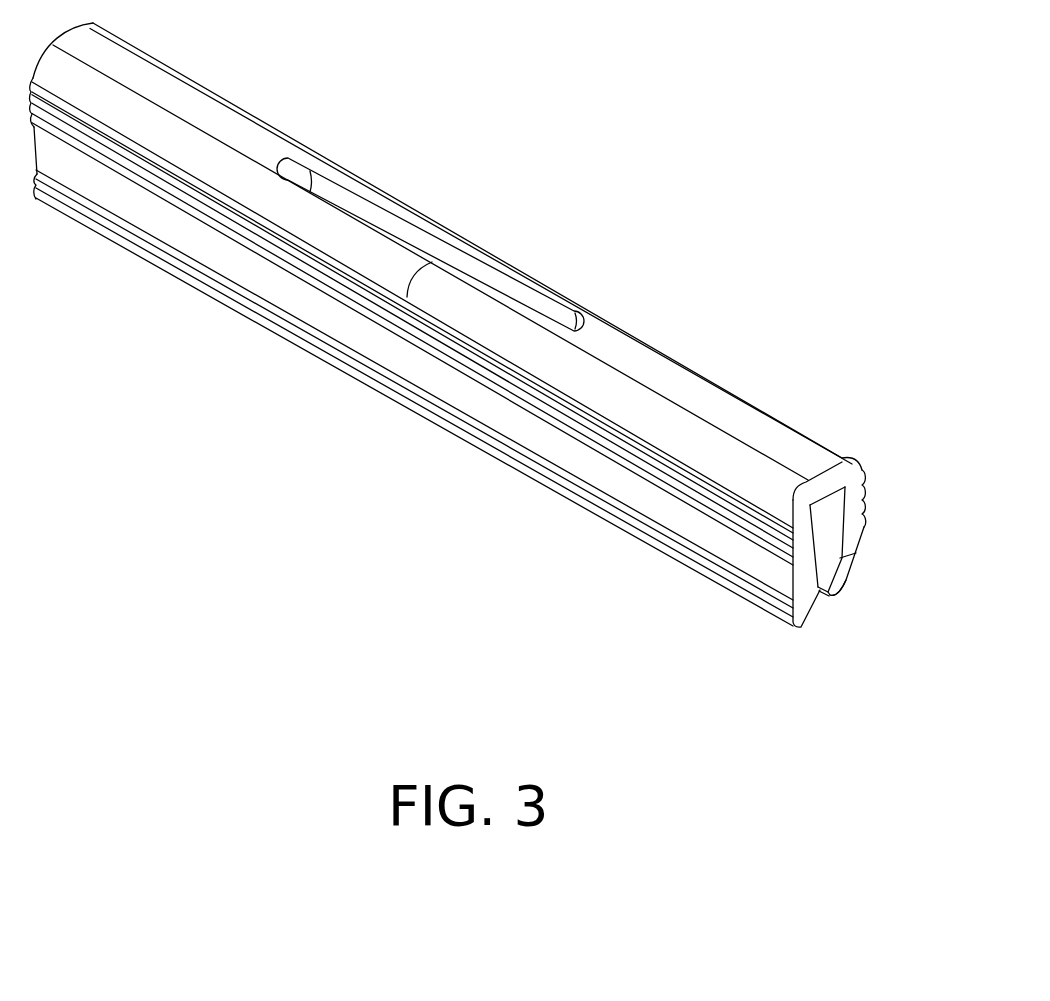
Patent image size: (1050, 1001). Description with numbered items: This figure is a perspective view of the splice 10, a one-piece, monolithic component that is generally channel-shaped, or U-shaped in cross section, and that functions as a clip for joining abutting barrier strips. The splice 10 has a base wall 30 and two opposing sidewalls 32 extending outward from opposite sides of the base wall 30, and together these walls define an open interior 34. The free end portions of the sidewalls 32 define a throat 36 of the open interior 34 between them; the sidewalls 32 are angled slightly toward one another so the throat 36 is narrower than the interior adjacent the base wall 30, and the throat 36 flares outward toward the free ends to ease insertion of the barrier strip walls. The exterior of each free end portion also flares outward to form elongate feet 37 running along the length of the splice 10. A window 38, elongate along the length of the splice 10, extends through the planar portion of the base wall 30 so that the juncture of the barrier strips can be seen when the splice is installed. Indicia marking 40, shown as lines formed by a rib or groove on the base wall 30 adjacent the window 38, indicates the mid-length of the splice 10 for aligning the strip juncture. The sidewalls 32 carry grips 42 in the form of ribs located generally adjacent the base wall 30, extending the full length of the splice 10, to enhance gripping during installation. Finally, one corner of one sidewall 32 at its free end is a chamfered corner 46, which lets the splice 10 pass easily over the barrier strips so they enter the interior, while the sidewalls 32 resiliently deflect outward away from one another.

The splice 10 is at (578, 183).
The base wall 30 is at (778, 437).
The sidewalls 32 is at (703, 530).
The open interior 34 is at (842, 558).
The throat 36 is at (826, 597).
The elongate feet 37 is at (522, 469).
The window 38 is at (362, 212).
The indicia marking 40 is at (460, 252).
The grips 42 is at (290, 247).
The chamfered corner 46 is at (843, 575).